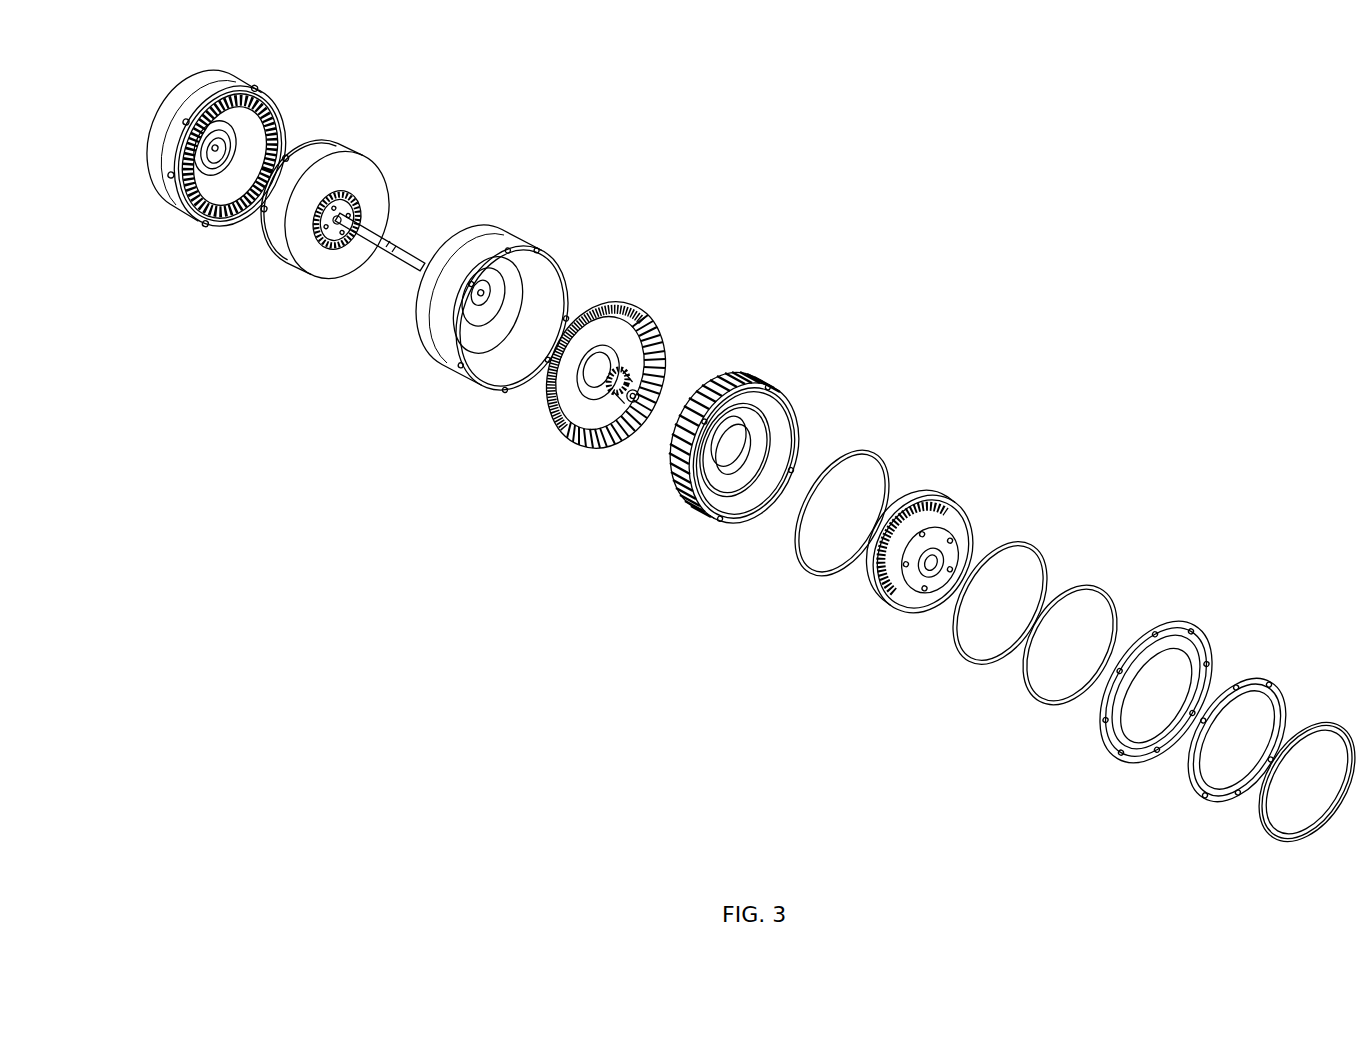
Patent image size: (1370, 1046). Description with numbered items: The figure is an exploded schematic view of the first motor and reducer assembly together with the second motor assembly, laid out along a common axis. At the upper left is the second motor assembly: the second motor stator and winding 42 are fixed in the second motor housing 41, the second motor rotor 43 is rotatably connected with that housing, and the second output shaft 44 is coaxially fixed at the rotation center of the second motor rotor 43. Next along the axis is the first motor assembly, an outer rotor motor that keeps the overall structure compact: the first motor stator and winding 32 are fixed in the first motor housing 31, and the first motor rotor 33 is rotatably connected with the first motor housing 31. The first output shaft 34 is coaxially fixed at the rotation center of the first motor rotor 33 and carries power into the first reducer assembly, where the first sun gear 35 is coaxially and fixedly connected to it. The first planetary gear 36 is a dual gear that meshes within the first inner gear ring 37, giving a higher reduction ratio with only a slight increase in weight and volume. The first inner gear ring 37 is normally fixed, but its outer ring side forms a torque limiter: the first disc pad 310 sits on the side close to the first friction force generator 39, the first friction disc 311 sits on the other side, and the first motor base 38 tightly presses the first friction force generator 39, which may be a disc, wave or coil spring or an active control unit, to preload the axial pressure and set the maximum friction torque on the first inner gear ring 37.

The first motor housing 31 is at (520, 232).
The first motor stator and winding 32 is at (760, 385).
The first motor rotor 33 is at (643, 312).
The first output shaft 34 is at (600, 445).
The first sun gear 35 is at (668, 358).
The first planetary gear 36 is at (935, 505).
The first inner gear ring 37 is at (882, 598).
The first motor base 38 is at (1187, 620).
The first friction force generator 39 is at (1105, 590).
The first disc pad 310 is at (1040, 548).
The first friction disc 311 is at (882, 462).
The second motor housing 41 is at (240, 73).
The second motor stator and winding 42 is at (200, 212).
The second motor rotor 43 is at (355, 145).
The second output shaft 44 is at (385, 240).